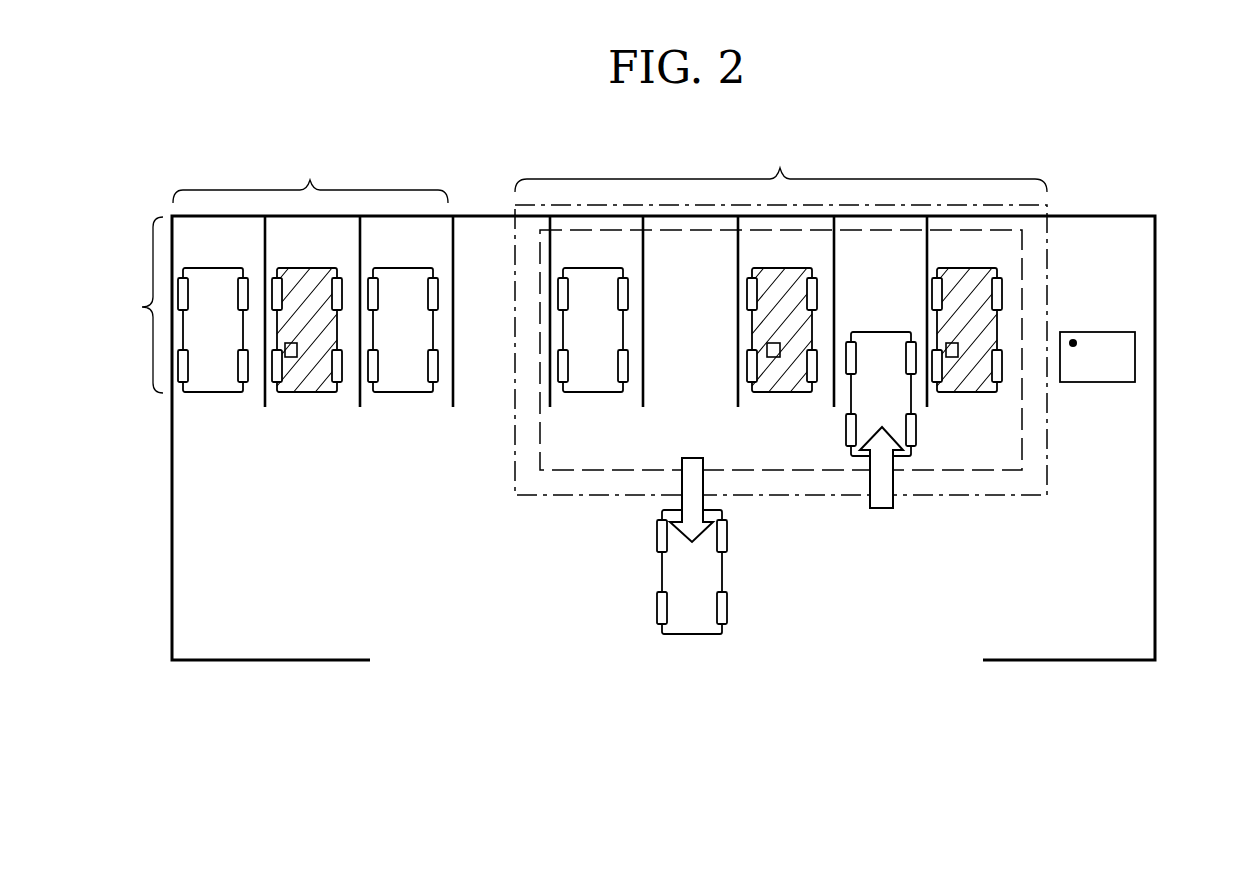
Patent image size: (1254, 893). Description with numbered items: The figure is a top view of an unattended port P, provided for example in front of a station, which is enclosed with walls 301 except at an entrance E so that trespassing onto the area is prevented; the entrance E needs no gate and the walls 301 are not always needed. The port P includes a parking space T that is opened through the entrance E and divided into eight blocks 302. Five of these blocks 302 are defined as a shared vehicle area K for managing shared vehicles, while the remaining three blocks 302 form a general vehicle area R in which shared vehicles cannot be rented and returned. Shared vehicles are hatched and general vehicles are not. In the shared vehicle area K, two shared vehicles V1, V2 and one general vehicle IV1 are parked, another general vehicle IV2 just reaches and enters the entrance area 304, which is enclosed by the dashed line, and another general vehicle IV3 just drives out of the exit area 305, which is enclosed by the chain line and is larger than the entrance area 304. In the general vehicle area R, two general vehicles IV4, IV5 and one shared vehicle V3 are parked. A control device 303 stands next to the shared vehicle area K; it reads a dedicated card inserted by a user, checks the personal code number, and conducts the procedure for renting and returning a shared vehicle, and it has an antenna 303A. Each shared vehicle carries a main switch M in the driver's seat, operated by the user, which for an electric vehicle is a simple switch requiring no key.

The walls 301 is at (1156, 627).
The blocks 302 is at (594, 311).
The control device 303 is at (1102, 320).
The antenna 303A is at (1073, 343).
The entrance area 304 is at (958, 470).
The exit area 305 is at (1033, 498).
The general vehicle area R is at (310, 176).
The shared vehicle area K is at (781, 166).
The parking space T is at (142, 305).
The port P is at (1192, 170).
The entrance E is at (682, 738).
The main switch M is at (292, 357).
The general vehicle IV1 is at (593, 375).
The general vehicle IV2 is at (857, 432).
The general vehicle IV3 is at (700, 580).
The general vehicle IV4 is at (400, 372).
The general vehicle IV5 is at (213, 372).
The shared vehicle V1 is at (980, 395).
The shared vehicle V2 is at (773, 375).
The shared vehicle V3 is at (320, 392).